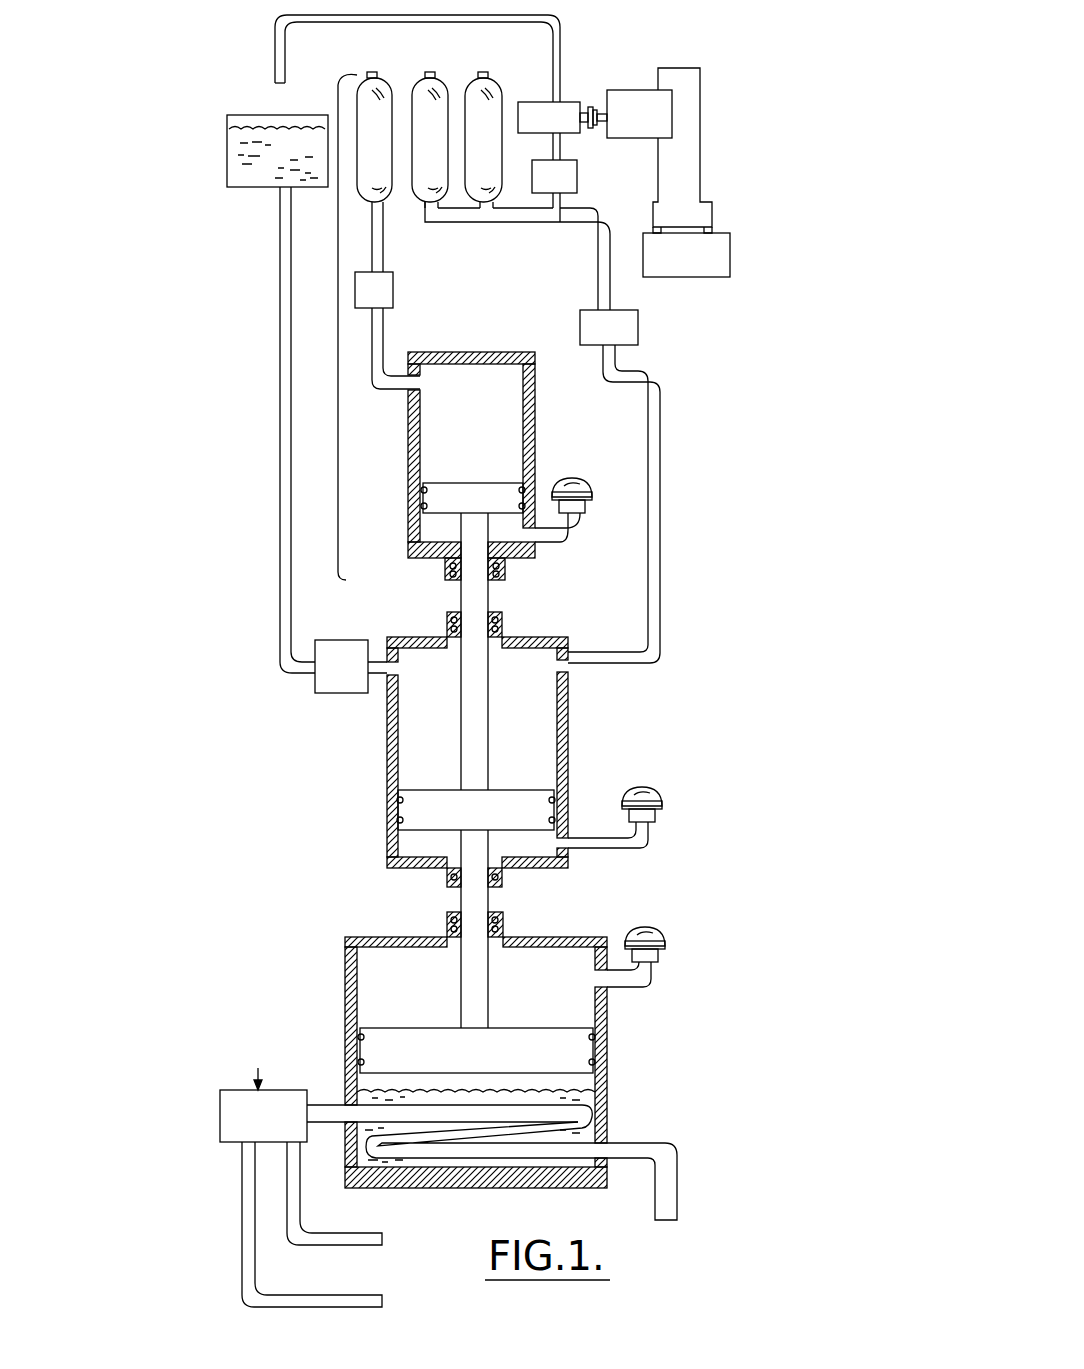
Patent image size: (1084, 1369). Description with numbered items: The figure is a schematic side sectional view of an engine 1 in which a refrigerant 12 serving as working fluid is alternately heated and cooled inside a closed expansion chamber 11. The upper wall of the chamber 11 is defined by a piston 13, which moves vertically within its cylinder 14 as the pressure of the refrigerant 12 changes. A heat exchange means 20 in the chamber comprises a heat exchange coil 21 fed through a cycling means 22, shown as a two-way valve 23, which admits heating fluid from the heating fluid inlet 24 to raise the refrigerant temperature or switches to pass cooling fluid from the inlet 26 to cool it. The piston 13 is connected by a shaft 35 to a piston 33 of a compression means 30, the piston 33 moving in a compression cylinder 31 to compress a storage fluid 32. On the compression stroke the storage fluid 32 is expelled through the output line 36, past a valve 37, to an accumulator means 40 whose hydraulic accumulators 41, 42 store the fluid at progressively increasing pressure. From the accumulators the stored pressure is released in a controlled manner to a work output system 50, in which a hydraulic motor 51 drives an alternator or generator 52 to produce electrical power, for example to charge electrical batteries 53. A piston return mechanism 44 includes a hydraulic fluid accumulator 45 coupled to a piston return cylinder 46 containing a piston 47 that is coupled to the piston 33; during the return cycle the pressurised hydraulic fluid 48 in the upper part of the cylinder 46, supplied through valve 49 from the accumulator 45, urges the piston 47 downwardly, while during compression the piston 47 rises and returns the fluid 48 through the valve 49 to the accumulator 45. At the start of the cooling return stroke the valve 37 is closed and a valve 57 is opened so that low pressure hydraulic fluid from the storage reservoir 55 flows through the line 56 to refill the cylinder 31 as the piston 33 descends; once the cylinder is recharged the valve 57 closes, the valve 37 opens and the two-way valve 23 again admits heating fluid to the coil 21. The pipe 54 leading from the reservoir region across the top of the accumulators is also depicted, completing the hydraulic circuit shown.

The engine 1 is at (762, 660).
The expansion chamber 11 is at (616, 1074).
The refrigerant 12 is at (457, 1107).
The piston 13 is at (402, 1037).
The cylinder 14 is at (358, 1005).
The heat exchange means 20 is at (578, 1140).
The heat exchange coil 21 is at (522, 1114).
The cycling means 22 is at (236, 1070).
The two-way valve 23 is at (282, 1131).
The heating fluid inlet 24 is at (368, 1237).
The cooling fluid inlet 26 is at (368, 1297).
The compression means 30 is at (365, 811).
The compression cylinder 31 is at (387, 712).
The storage fluid 32 is at (412, 745).
The piston 33 is at (500, 794).
The shaft 35 is at (477, 903).
The output line 36 is at (660, 590).
The valve 37 is at (638, 329).
The accumulator means 40 is at (465, 235).
The hydraulic accumulator 41 is at (431, 72).
The hydraulic accumulator 42 is at (481, 72).
The piston return mechanism 44 is at (338, 345).
The hydraulic fluid accumulator 45 is at (390, 200).
The piston return cylinder 46 is at (533, 448).
The piston 47 is at (473, 492).
The hydraulic fluid 48 is at (490, 405).
The valve 49 is at (357, 272).
The controlled work output system 50 is at (533, 94).
The hydraulic motor 51 is at (574, 94).
The alternator or generator 52 is at (657, 88).
The electrical batteries 53 is at (716, 233).
The pipe 54 is at (373, 25).
The storage reservoir 55 is at (257, 188).
The line 56 is at (281, 410).
The valve 57 is at (350, 606).